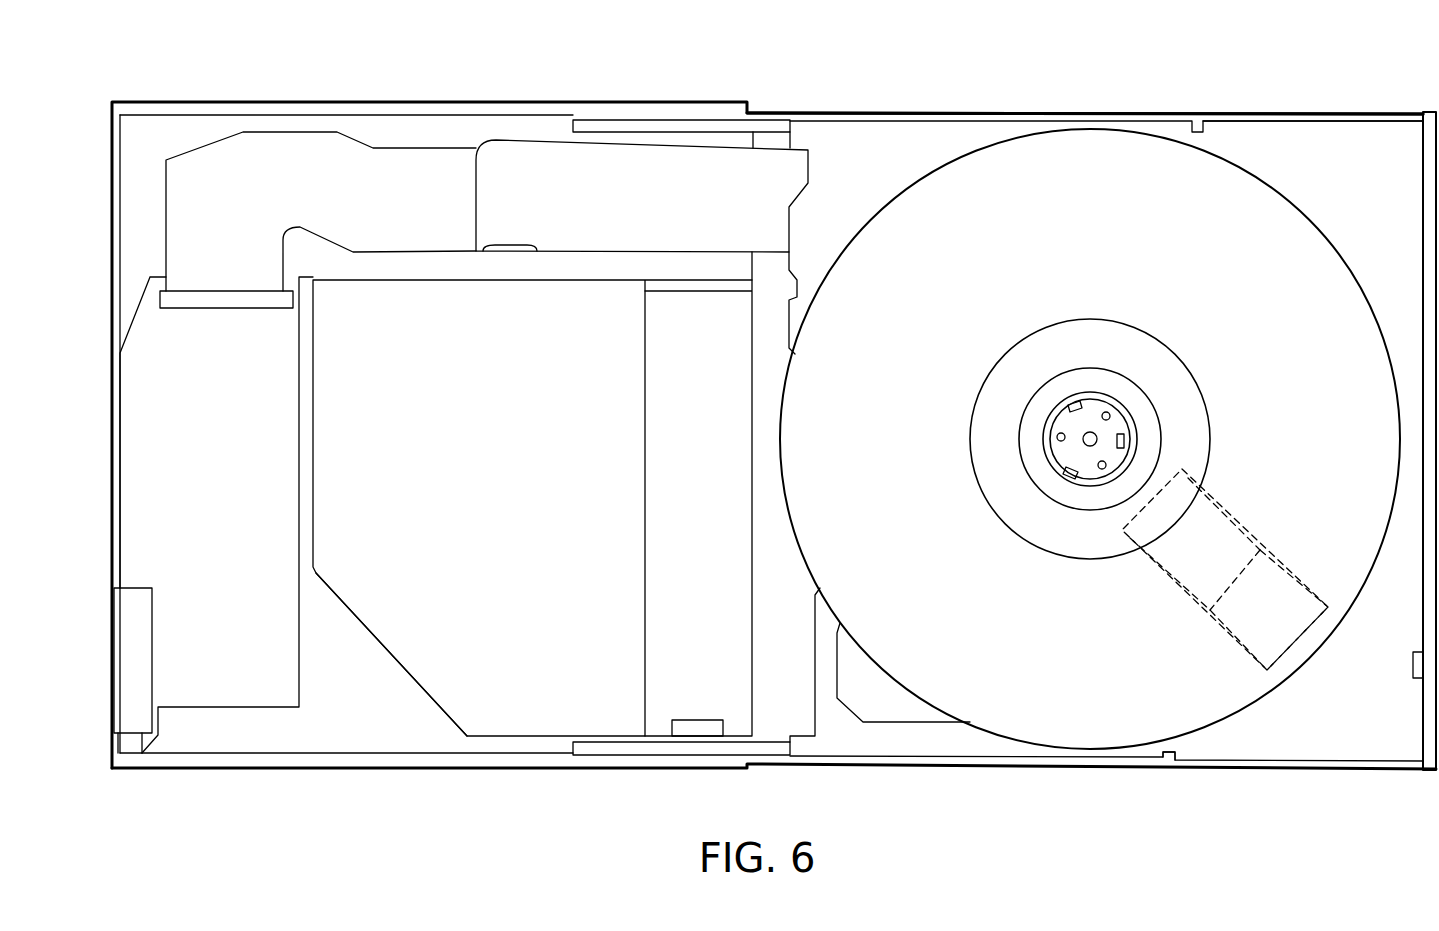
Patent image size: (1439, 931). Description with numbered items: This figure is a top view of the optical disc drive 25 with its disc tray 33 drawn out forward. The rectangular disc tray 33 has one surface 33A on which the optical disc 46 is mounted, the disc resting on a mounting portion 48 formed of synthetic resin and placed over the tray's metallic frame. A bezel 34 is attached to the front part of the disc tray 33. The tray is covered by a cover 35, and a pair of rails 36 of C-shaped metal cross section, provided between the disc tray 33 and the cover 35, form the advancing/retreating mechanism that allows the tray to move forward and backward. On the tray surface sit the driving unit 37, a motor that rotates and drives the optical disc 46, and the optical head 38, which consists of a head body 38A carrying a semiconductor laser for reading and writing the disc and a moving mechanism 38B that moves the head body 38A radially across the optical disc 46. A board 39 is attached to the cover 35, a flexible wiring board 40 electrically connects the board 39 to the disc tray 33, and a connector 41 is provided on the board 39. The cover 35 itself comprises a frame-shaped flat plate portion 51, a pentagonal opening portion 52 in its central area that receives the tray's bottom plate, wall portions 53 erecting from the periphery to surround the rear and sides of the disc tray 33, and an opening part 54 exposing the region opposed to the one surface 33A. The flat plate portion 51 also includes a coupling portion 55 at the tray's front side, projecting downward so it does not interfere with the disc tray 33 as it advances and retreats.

The optical disc drive 25 is at (823, 94).
The disc tray 33 is at (1252, 153).
The one surface 33A is at (1323, 143).
The bezel 34 is at (1427, 778).
The cover 35 is at (418, 108).
The pair of rails 36 is at (920, 120).
The driving unit 37 is at (1093, 410).
The optical head 38 is at (1257, 530).
The head body 38A is at (1203, 488).
The moving mechanism 38B is at (1298, 577).
The board 39 is at (292, 686).
The flexible wiring board 40 is at (290, 155).
The connector 41 is at (132, 722).
The optical disc 46 is at (1093, 150).
The mounting portion 48 is at (1198, 743).
The flat plate portion 51 is at (362, 648).
The opening portion 52 is at (473, 488).
The wall portions 53 is at (520, 112).
The opening part 54 is at (410, 726).
The coupling portion 55 is at (650, 508).